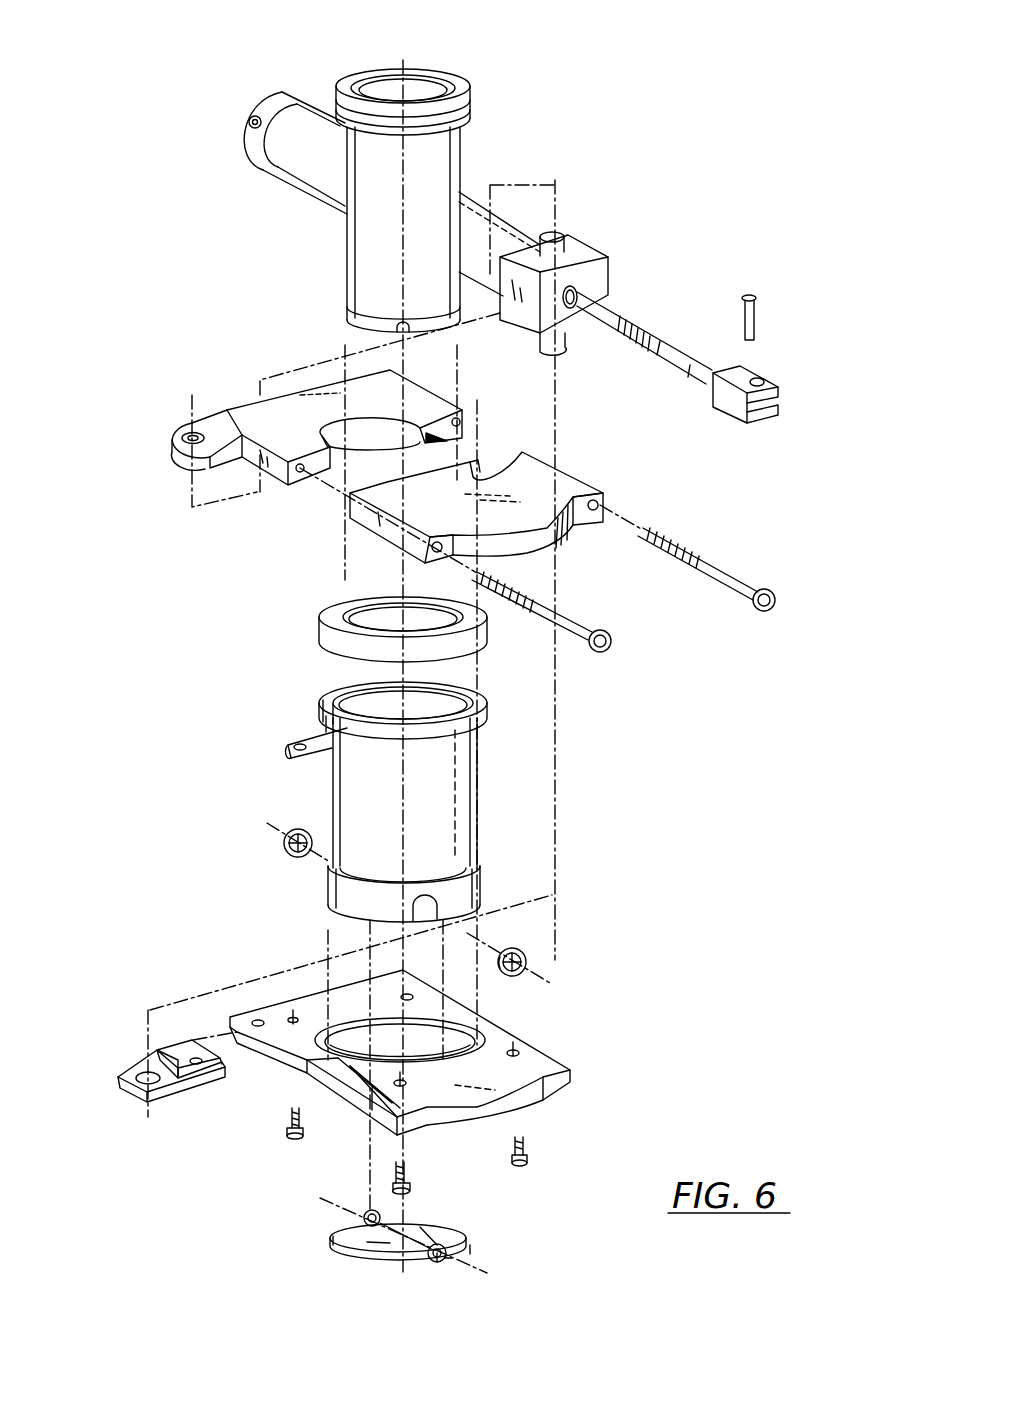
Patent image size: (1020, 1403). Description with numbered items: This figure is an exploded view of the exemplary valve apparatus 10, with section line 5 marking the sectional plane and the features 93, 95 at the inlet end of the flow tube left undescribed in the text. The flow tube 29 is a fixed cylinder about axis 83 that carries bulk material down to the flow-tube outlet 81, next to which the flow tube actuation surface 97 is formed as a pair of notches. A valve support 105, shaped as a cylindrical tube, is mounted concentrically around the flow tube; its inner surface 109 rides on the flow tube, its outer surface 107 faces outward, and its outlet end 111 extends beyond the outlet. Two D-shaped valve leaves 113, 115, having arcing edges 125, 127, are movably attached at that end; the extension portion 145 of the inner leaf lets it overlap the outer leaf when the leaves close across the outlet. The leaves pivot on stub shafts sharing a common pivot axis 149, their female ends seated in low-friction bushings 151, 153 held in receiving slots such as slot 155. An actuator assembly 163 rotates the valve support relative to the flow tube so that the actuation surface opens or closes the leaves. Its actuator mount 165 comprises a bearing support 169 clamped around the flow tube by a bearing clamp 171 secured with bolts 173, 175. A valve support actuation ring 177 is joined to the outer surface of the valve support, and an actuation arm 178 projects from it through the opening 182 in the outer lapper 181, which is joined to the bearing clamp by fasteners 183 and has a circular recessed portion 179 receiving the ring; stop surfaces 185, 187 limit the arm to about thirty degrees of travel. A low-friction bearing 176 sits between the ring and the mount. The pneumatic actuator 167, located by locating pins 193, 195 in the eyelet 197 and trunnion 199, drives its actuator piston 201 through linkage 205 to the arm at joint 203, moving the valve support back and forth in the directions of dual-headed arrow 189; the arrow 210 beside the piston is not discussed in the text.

The section line 5- 5 is at (403, 60).
The pump apparatus 10 is at (196, 249).
The flow tube 29 is at (444, 148).
The flow-tube outlet 81 is at (354, 327).
The axis 83 is at (410, 68).
The flange 93 is at (463, 84).
The groove 95 is at (471, 103).
The flow tube actuation surface 97 is at (408, 333).
The valve support 105 is at (347, 768).
The outer surface 107 is at (438, 848).
The inner surface 109 is at (448, 695).
The outlet end 111 is at (348, 921).
The valve leaf 113 is at (345, 1230).
The valve leaf 115 is at (463, 1237).
The arcing edge 125 is at (338, 1244).
The arcing edge 127 is at (470, 1251).
The extension portion 145 is at (427, 1228).
The pivot axis 149 is at (534, 973).
The bushing 151 is at (524, 951).
The bushing 153 is at (283, 843).
The receiving slot 155 is at (446, 894).
The actuator assembly 163 is at (660, 767).
The actuator mount 165 is at (291, 509).
The actuator 167 is at (302, 173).
The bearing support 169 is at (245, 406).
The bearing clamp 171 is at (571, 483).
The bolt 173 is at (577, 624).
The bolt 175 is at (710, 570).
The bearing 176 is at (320, 628).
The valve support actuation ring 177 is at (330, 703).
The actuation arm 178 is at (320, 727).
The circular recessed portion 179 is at (471, 1031).
The outer lapper 181 is at (540, 1068).
The opening 182 is at (297, 1140).
The fastener 183 is at (293, 1118).
The stop surface 185 is at (297, 1080).
The stop surface 187 is at (347, 1100).
The dual-headed arrow 189 is at (425, 572).
The locating pin 193 is at (572, 243).
The locating pin 195 is at (566, 343).
The eyelet 197 is at (186, 433).
The trunnion 199 is at (128, 1070).
The actuator piston 201 is at (674, 366).
The joint 203 is at (290, 742).
The linkage 205 is at (762, 377).
The movement direction 210 is at (690, 330).